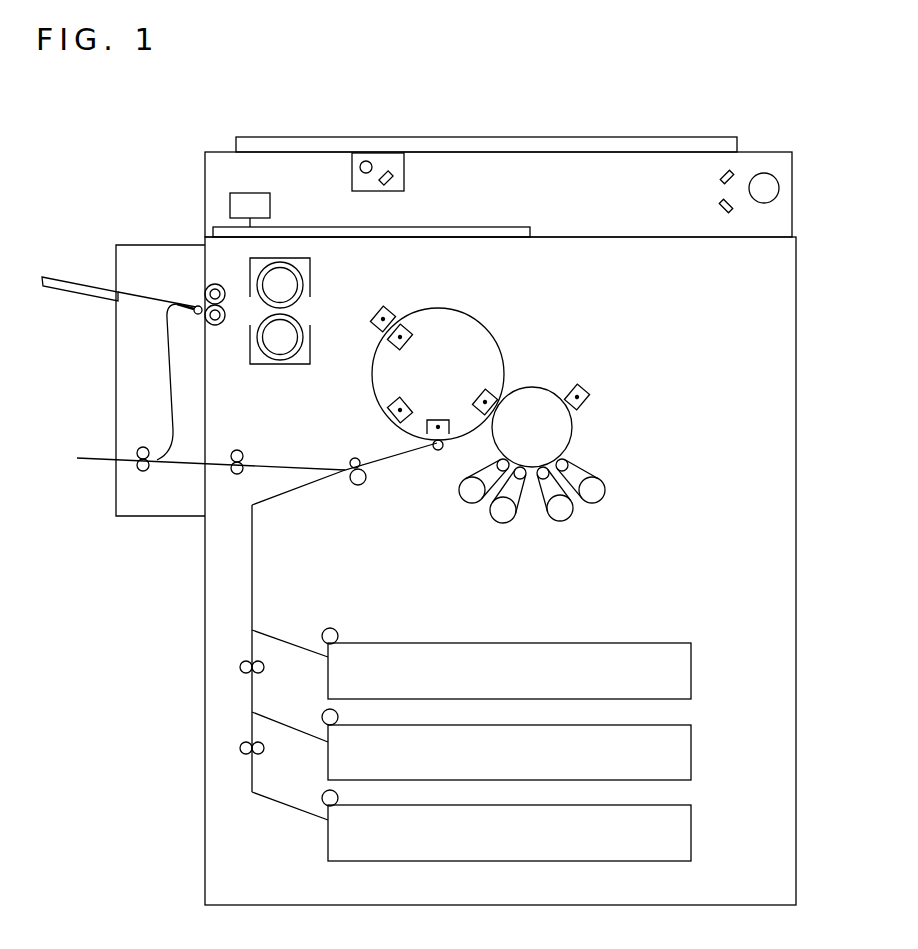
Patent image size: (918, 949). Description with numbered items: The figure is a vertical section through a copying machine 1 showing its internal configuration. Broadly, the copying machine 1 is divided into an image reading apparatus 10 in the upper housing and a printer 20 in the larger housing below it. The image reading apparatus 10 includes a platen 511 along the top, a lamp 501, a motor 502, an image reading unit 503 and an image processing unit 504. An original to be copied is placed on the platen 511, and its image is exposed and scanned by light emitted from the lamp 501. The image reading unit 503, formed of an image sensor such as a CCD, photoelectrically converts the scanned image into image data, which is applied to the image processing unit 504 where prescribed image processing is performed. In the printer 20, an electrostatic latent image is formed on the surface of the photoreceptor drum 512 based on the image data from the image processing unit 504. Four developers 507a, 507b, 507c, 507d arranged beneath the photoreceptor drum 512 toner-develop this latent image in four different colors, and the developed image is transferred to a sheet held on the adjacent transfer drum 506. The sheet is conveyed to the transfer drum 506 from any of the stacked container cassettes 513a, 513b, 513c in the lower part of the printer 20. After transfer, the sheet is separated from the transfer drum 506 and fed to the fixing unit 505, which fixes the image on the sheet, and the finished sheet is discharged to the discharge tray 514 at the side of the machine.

The copying machine 1 is at (220, 122).
The image reading apparatus 10 is at (196, 178).
The printer 20 is at (446, 279).
The lamp 501 is at (404, 172).
The motor 502 is at (763, 173).
The image reading unit 503 is at (270, 204).
The image processing unit 504 is at (508, 227).
The fixing unit 505 is at (310, 266).
The transfer drum 506 is at (468, 310).
The developer 507a is at (462, 497).
The developer 507b is at (497, 521).
The developer 507c is at (563, 521).
The developer 507d is at (604, 500).
The platen 511 is at (340, 137).
The photoreceptor drum 512 is at (537, 387).
The container cassette 513a is at (692, 665).
The container cassette 513b is at (692, 746).
The container cassette 513c is at (692, 828).
The discharge tray 514 is at (64, 278).